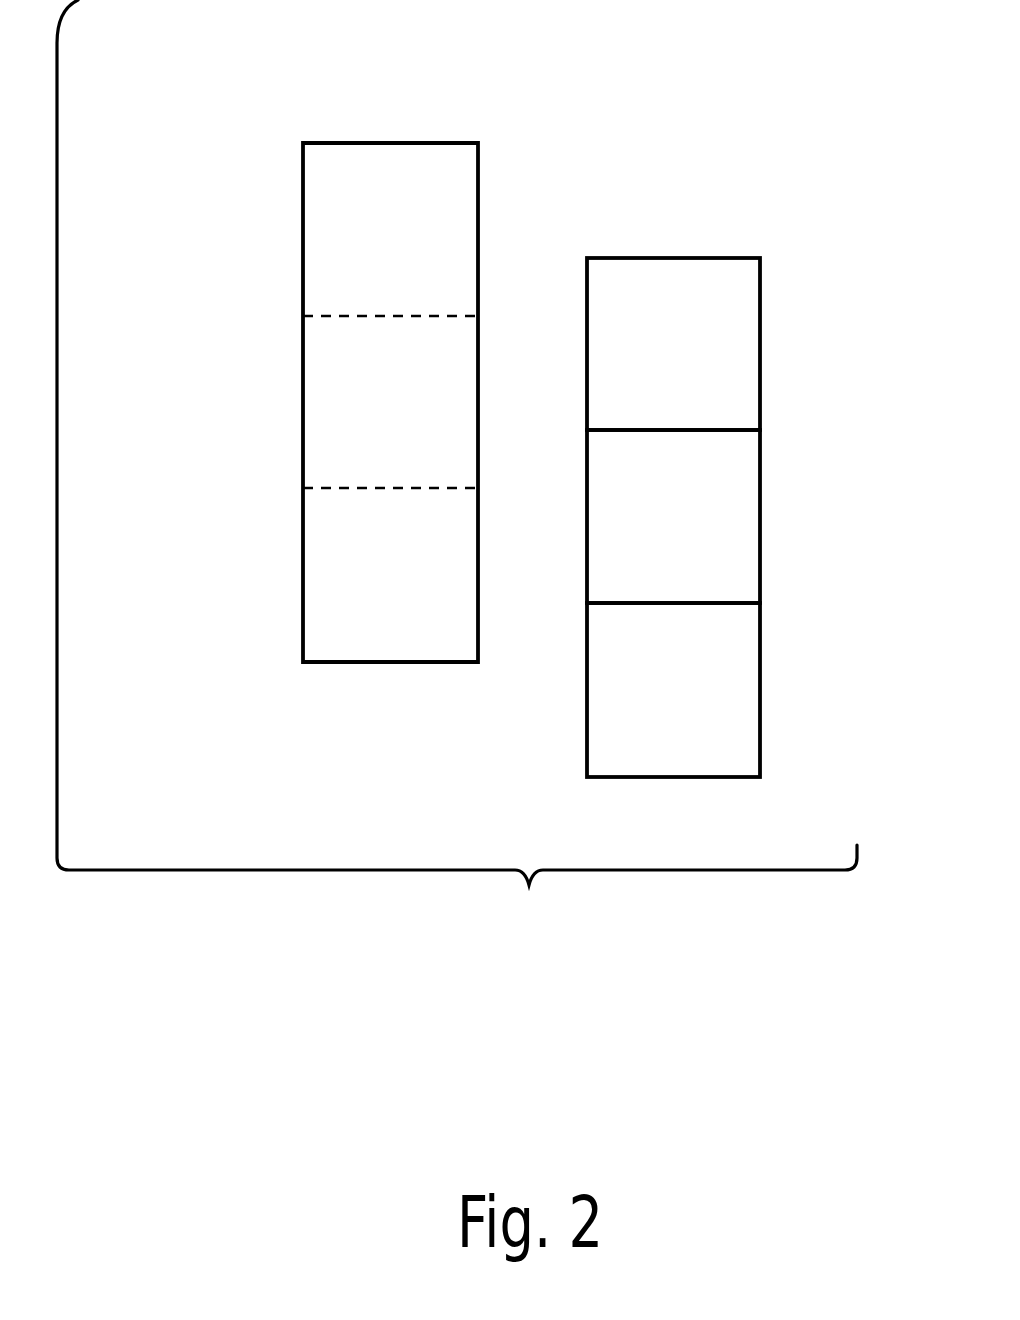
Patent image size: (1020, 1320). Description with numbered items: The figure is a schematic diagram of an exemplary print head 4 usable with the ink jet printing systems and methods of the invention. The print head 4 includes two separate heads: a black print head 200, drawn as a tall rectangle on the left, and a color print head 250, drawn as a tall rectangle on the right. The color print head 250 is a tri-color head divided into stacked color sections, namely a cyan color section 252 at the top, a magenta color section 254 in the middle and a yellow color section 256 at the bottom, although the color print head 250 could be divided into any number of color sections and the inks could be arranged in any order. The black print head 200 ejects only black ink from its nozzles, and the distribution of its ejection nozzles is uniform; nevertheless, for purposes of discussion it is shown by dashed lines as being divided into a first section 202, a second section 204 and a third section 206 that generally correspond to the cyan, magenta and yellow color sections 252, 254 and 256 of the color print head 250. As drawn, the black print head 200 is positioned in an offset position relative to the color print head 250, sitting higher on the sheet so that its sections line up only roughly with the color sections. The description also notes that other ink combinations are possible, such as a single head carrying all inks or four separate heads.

The print head 4 is at (291, 90).
The black print head 200 is at (384, 362).
The first section 202 is at (318, 218).
The second section 204 is at (312, 390).
The third section 206 is at (312, 568).
The color print head 250 is at (732, 489).
The cyan color section 252 is at (747, 365).
The magenta color section 254 is at (747, 503).
The yellow color section 256 is at (747, 660).